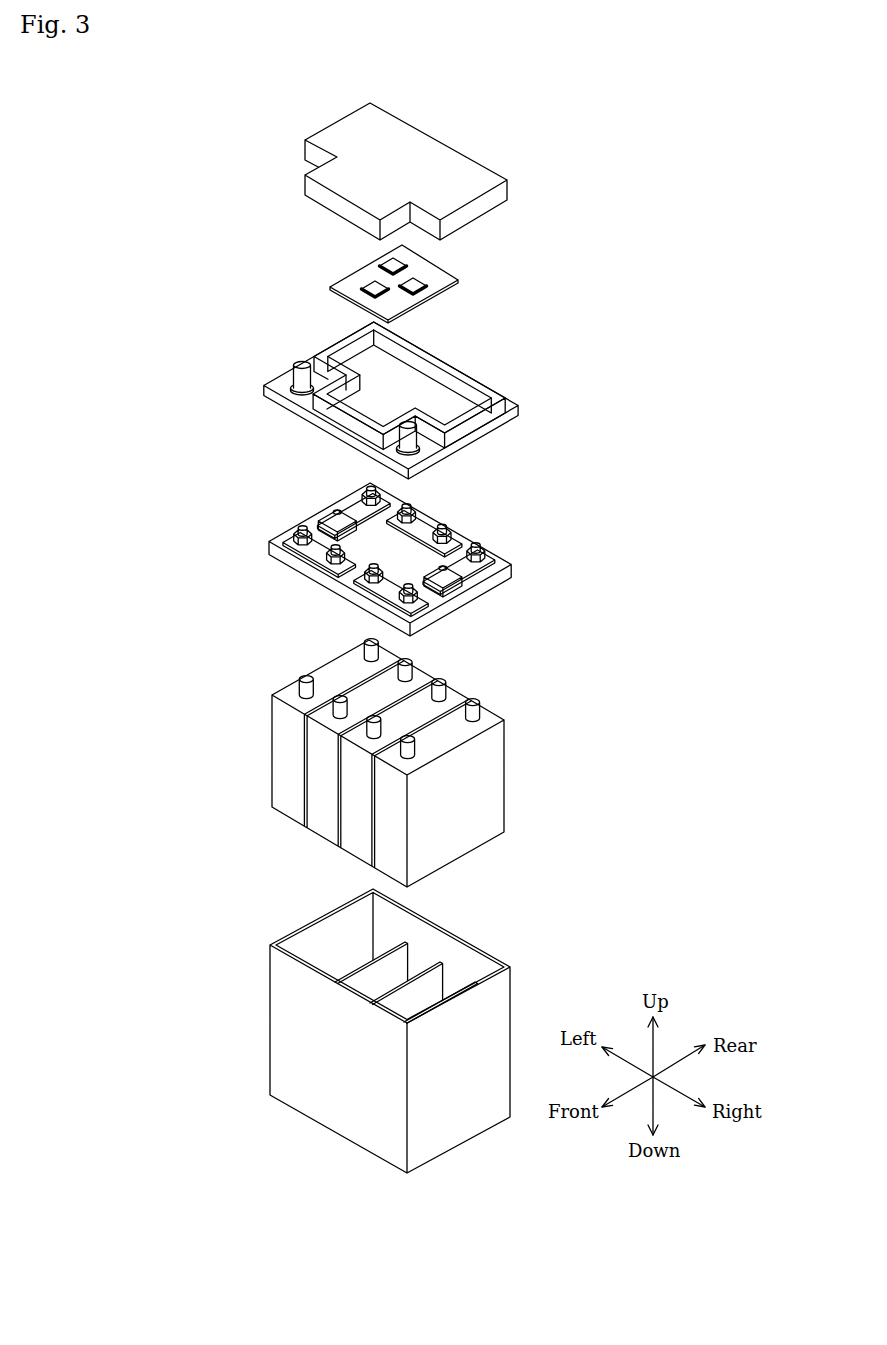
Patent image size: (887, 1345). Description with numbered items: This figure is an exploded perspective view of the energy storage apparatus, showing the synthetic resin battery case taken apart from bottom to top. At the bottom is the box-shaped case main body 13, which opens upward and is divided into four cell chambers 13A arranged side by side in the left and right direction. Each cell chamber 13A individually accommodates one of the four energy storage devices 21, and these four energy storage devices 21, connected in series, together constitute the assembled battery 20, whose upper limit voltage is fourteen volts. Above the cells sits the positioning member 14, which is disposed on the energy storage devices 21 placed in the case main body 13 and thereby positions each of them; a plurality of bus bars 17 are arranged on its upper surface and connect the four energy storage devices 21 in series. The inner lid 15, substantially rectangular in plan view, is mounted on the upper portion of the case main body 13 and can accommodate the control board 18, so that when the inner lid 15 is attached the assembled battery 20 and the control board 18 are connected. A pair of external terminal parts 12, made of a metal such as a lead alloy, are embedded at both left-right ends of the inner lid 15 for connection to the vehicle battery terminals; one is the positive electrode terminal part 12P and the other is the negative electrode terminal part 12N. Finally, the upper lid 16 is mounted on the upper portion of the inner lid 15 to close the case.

The upper lid 16 is at (453, 160).
The control board 18 is at (433, 277).
The inner lid 15 is at (500, 425).
The external terminal parts 12 is at (373, 406).
The positive electrode terminal part 12P is at (308, 362).
The negative electrode terminal part 12N is at (420, 442).
The positioning member 14 is at (468, 595).
The bus bars 17 is at (353, 492).
The assembled battery 20 is at (331, 783).
The energy storage devices 21 is at (290, 793).
The case main body 13 is at (422, 1023).
The cell chambers 13A is at (382, 967).